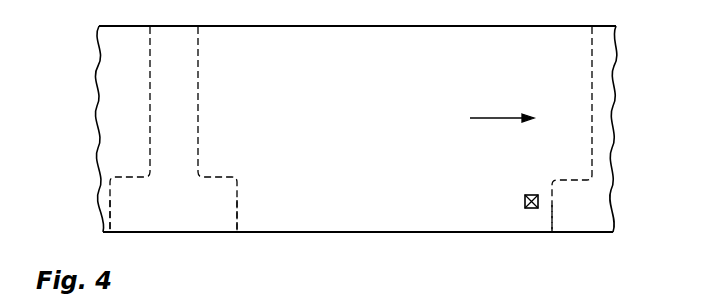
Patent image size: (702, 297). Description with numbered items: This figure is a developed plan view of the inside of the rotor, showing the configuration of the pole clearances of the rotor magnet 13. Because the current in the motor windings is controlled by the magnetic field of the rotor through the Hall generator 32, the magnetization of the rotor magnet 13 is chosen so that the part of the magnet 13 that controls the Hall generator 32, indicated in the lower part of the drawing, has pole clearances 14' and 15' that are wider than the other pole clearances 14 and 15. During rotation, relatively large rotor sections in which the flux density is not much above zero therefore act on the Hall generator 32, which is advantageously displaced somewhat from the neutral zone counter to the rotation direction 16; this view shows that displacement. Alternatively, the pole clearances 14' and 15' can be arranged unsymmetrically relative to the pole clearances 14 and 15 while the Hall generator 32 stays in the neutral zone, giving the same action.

The rotor magnet 13 is at (478, 71).
The pole clearance 14 is at (173, 117).
The pole clearance 14' is at (173, 231).
The pole clearance 15 is at (578, 116).
The pole clearance 15' is at (579, 240).
The rotation direction 16 is at (492, 118).
The Hall generator 32 is at (524, 201).